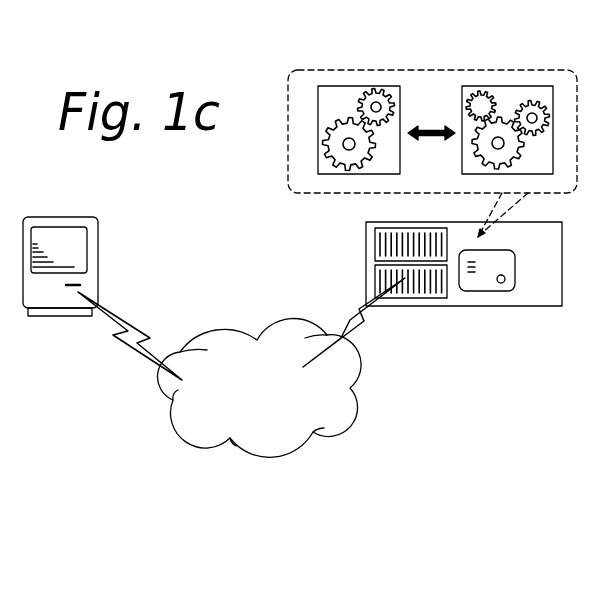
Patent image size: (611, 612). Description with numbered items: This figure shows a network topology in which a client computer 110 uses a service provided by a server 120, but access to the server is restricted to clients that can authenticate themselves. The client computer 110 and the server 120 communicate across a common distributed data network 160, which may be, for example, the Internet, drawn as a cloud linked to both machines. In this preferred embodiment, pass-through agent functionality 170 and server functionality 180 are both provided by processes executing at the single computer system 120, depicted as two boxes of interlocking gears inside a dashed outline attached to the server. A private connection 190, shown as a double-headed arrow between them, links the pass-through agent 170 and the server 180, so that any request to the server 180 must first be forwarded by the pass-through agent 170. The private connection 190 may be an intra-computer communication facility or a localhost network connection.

The client computer 110 is at (53, 316).
The server 120 is at (550, 306).
The common distributed data network 160 is at (338, 413).
The pass-through agent functionality 170 is at (327, 172).
The server functionality 180 is at (528, 86).
The private connection 190 is at (430, 120).